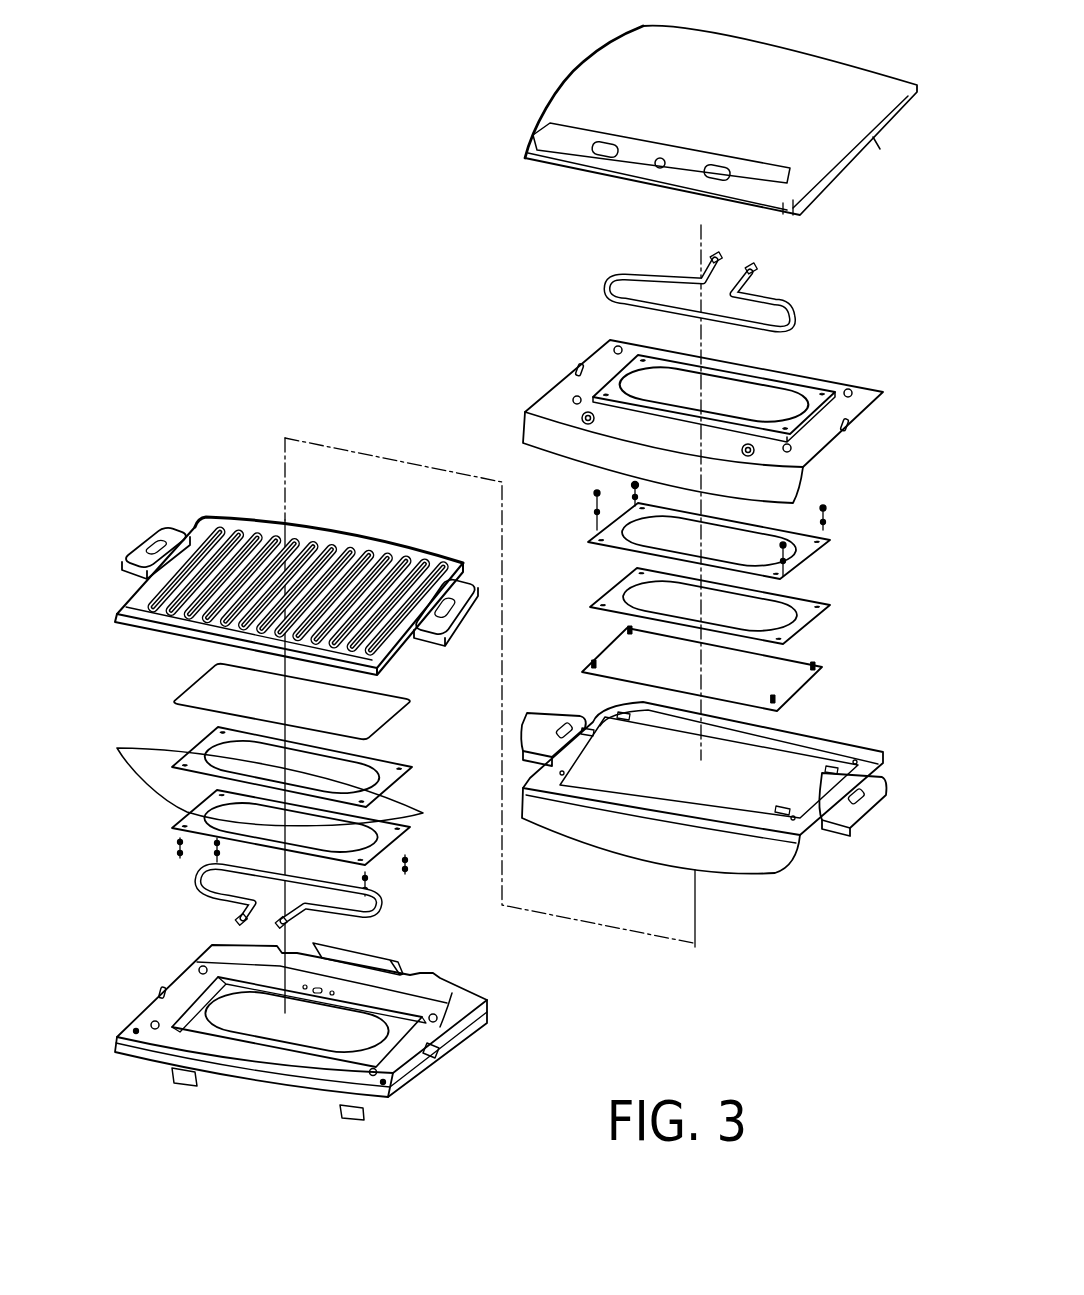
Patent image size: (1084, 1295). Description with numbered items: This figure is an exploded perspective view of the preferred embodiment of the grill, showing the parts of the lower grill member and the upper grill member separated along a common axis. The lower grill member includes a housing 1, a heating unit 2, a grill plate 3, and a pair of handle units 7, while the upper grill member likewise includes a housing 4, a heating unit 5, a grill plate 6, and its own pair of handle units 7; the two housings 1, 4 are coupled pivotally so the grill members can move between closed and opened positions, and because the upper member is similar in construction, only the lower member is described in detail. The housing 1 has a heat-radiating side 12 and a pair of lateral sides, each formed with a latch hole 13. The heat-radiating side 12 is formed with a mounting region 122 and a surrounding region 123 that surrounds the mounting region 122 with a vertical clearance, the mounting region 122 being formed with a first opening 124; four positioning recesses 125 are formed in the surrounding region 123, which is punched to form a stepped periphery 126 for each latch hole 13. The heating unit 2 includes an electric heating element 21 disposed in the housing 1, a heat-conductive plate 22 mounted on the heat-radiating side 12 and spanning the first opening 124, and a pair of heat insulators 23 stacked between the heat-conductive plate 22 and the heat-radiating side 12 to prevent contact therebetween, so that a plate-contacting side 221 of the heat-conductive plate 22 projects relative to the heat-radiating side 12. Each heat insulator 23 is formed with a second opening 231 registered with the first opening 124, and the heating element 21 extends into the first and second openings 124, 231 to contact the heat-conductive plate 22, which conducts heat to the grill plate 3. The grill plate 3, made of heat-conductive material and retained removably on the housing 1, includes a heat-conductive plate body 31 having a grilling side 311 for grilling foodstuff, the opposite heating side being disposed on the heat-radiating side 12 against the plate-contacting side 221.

The housing 1 is at (300, 1032).
The heat-radiating side 12 is at (400, 1067).
The mounting region 122 is at (200, 1002).
The surrounding region 123 is at (185, 997).
The first opening 124 is at (288, 1040).
The positioning recess 125 is at (437, 1013).
The stepped periphery 126 is at (162, 990).
The latch hole 13 is at (442, 1043).
The heating unit 2 is at (181, 689).
The electric heating element 21 is at (245, 910).
The heat-conductive plate 22 is at (173, 702).
The plate-contacting side 221 is at (375, 718).
The heat insulator 23 is at (278, 796).
The second opening 231 is at (412, 818).
The grill plate 3 is at (289, 540).
The heat-conductive plate body 31 is at (308, 528).
The grilling side 311 is at (257, 535).
The housing 4 is at (575, 74).
The heating unit 5 is at (800, 699).
The grill plate 6 is at (813, 837).
The handle unit 7 is at (150, 530).